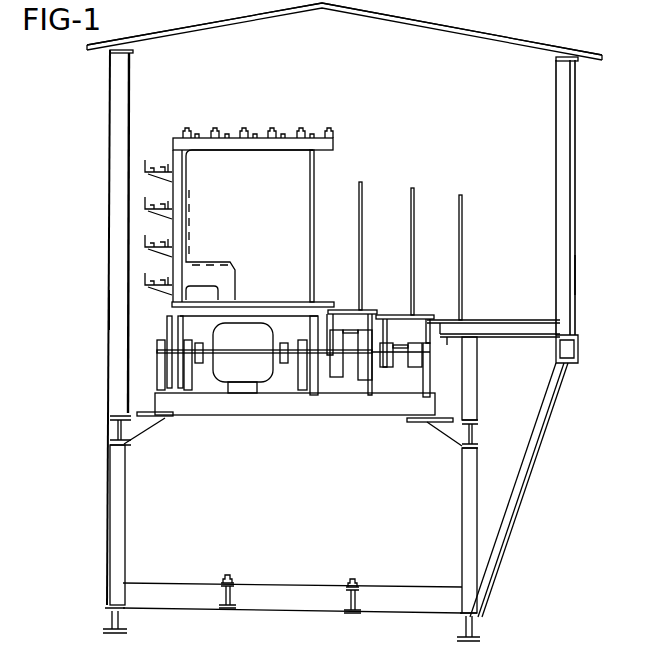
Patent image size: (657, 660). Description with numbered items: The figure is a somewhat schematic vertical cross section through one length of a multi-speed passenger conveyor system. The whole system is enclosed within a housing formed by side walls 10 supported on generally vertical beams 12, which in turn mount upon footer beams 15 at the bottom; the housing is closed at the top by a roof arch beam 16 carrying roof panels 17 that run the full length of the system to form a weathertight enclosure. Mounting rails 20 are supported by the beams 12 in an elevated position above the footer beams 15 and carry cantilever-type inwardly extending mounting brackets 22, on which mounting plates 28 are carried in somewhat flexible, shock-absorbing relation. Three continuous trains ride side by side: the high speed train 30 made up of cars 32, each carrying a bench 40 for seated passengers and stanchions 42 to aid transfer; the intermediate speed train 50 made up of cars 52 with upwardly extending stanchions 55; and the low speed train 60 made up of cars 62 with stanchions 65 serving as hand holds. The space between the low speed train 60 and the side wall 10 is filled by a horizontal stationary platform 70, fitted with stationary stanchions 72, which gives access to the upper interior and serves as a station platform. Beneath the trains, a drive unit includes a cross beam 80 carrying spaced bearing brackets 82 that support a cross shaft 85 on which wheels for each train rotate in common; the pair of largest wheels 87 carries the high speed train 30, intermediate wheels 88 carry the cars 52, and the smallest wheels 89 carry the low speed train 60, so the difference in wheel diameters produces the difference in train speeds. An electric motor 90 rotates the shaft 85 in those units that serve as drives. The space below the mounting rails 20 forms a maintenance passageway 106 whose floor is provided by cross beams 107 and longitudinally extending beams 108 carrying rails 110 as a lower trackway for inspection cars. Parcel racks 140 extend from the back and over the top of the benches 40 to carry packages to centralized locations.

The side walls 10 is at (112, 312).
The vertical beams 12 is at (118, 165).
The footer beams 15 is at (104, 621).
The roof arch beam 16 is at (311, 20).
The roof panels 17 is at (167, 32).
The mounting rails 20 is at (115, 430).
The mounting brackets 22 is at (132, 431).
The mounting plates 28 is at (168, 418).
The high speed train 30 is at (254, 260).
The cars 32 is at (270, 302).
The bench 40 is at (208, 230).
The stanchions 42 is at (314, 188).
The intermediate speed train 50 is at (370, 289).
The cars 52 is at (347, 313).
The stanchions 55 is at (362, 205).
The low speed train 60 is at (422, 269).
The cars 62 is at (415, 319).
The stanchions 65 is at (414, 205).
The stationary platform 70 is at (502, 321).
The stationary stanchions 72 is at (462, 210).
The cross beam 80 is at (289, 414).
The bearing brackets 82 is at (158, 376).
The cross shaft 85 is at (352, 357).
The wheels 87 is at (172, 326).
The wheels 88 is at (337, 380).
The wheels 89 is at (413, 367).
The electric motor 90 is at (250, 375).
The floor space 106 is at (430, 539).
The cross beams 107 is at (202, 604).
The longitudinally extending beams 108 is at (340, 607).
The rails 110 is at (350, 580).
The racks 140 is at (264, 128).